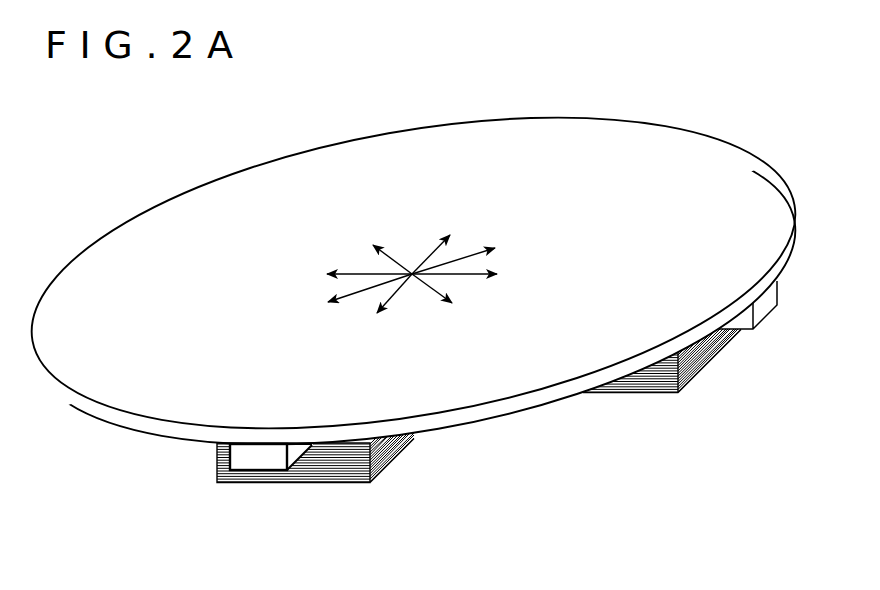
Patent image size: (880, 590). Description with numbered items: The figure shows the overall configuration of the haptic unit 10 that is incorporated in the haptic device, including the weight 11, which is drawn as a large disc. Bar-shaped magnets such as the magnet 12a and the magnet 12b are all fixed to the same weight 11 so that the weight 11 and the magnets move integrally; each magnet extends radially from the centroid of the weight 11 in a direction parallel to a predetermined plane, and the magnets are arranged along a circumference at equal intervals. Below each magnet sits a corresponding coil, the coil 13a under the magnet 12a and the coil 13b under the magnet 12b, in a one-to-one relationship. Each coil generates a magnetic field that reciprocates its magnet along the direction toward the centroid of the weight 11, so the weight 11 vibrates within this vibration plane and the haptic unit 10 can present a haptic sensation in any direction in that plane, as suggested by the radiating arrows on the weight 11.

The haptic unit 10 is at (422, 309).
The weight 11 is at (583, 117).
The magnet 12a is at (762, 306).
The magnet 12b is at (255, 459).
The coil 13a is at (705, 370).
The coil 13b is at (393, 462).